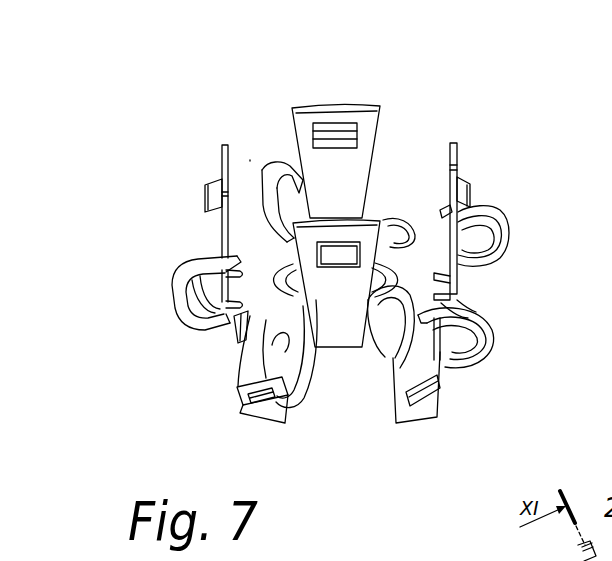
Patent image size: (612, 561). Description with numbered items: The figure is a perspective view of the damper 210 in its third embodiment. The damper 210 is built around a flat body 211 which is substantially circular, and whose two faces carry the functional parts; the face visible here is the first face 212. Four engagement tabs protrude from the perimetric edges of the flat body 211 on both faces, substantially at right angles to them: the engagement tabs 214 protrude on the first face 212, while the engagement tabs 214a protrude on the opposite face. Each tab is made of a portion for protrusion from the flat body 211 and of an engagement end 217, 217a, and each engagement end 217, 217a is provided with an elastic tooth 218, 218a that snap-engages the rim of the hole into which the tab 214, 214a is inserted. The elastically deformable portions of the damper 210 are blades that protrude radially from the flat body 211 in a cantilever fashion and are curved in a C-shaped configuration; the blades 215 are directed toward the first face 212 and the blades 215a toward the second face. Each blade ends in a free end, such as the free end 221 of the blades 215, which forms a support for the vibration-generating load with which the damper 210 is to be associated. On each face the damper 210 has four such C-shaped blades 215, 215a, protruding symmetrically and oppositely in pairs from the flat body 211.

The damper 210 is at (224, 97).
The flat body 211 is at (236, 322).
The first face 212 is at (405, 257).
The engagement tab 214 is at (236, 158).
The engagement tab 214a is at (246, 356).
The blade 215 is at (278, 203).
The blade 215a is at (488, 322).
The engagement end 217 is at (338, 113).
The engagement end 217a is at (422, 409).
The elastic tooth 218 is at (462, 188).
The elastic tooth 218a is at (250, 403).
The free end 221 is at (278, 198).